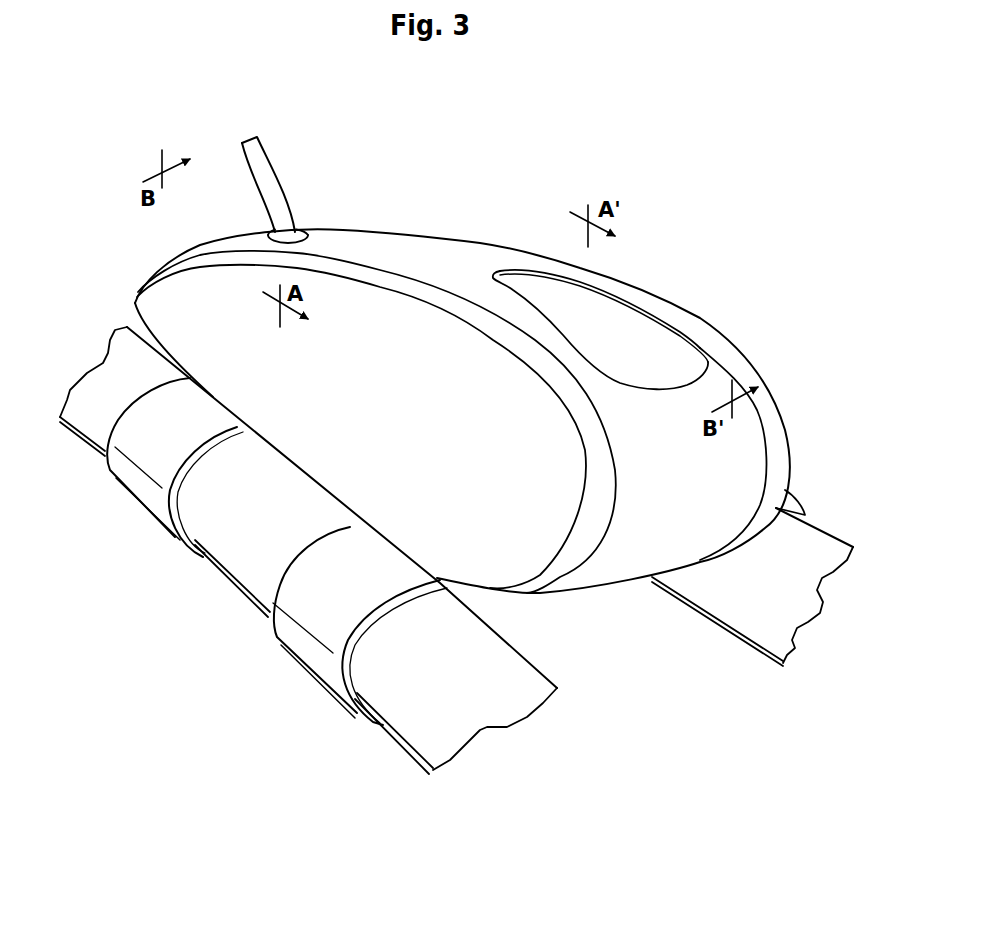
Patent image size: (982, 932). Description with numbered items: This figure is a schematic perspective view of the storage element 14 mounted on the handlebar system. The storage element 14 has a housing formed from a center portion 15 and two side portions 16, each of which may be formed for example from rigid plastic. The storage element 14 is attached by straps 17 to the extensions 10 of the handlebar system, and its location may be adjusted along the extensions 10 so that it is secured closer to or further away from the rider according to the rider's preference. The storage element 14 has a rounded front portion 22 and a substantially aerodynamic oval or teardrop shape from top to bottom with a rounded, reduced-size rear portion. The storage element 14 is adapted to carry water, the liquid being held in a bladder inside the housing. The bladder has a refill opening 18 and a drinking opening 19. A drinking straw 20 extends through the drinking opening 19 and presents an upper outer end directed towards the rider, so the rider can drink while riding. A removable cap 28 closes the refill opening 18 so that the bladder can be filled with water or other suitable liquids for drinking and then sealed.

The extensions 10 is at (715, 600).
The storage element 14 is at (387, 214).
The center portion 15 is at (343, 244).
The side portions 16 is at (407, 417).
The straps 17 is at (137, 494).
The refill opening 18 is at (596, 369).
The drinking opening 19 is at (272, 228).
The drinking straw 20 is at (267, 170).
The rounded front portion 22 is at (713, 495).
The removable cap 28 is at (603, 312).